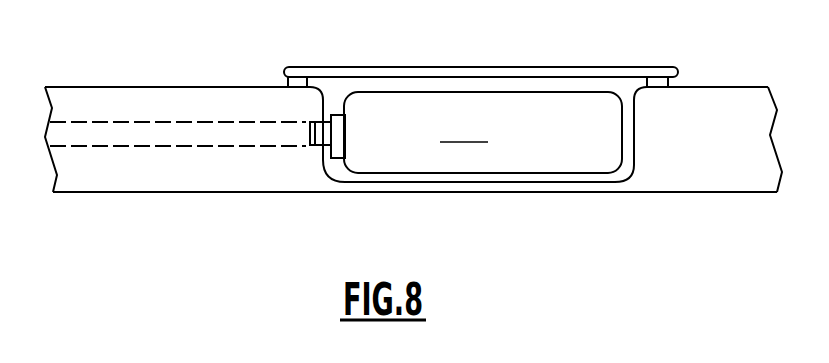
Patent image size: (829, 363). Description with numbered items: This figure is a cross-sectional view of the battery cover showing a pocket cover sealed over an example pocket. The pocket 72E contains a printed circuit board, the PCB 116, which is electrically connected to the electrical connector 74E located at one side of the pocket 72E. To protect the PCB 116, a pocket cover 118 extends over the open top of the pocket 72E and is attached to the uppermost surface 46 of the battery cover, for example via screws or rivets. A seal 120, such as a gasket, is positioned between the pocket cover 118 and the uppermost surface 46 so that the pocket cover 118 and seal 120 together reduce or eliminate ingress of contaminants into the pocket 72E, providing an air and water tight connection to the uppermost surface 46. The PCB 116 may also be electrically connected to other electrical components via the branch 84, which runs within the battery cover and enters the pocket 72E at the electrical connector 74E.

The uppermost surface 46 is at (200, 87).
The branch 84 is at (158, 132).
The pocket 72E is at (626, 162).
The electrical connector 74E is at (323, 137).
The printed circuit board (PCB) 116 is at (487, 160).
The pocket cover 118 is at (521, 67).
The seal 120 is at (660, 80).